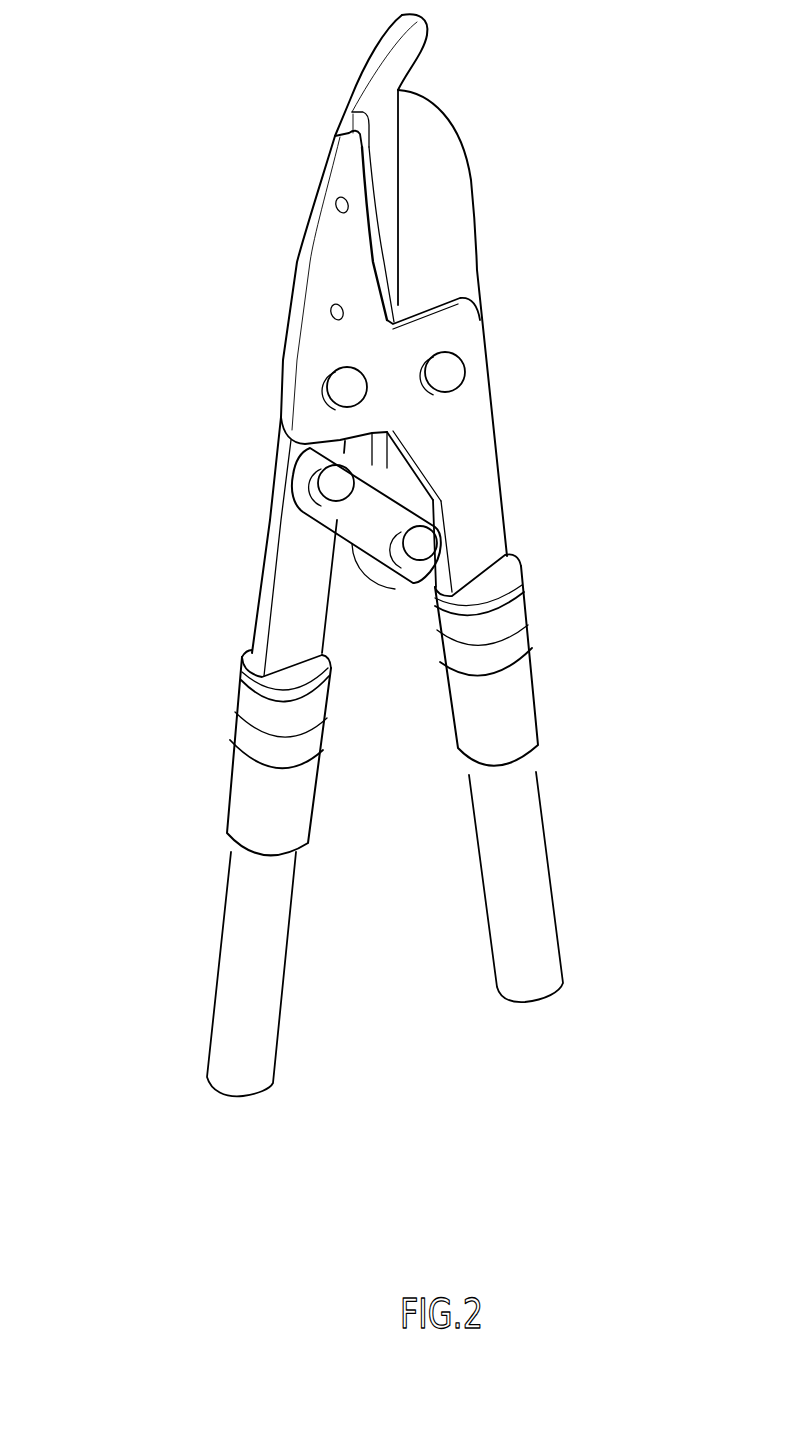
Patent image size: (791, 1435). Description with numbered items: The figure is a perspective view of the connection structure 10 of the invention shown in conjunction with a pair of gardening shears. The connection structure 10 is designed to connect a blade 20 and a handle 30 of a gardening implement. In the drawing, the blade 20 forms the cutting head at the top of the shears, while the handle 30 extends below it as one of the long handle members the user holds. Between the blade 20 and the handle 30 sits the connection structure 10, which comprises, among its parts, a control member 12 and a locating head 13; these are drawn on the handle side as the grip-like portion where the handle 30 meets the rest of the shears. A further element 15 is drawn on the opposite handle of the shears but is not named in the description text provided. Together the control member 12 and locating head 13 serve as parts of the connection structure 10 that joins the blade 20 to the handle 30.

The connection structure 10 is at (200, 687).
The control member 12 is at (508, 625).
The locating head 13 is at (508, 697).
The grip 15 is at (243, 663).
The blade 20 is at (317, 345).
The handle 30 is at (535, 920).